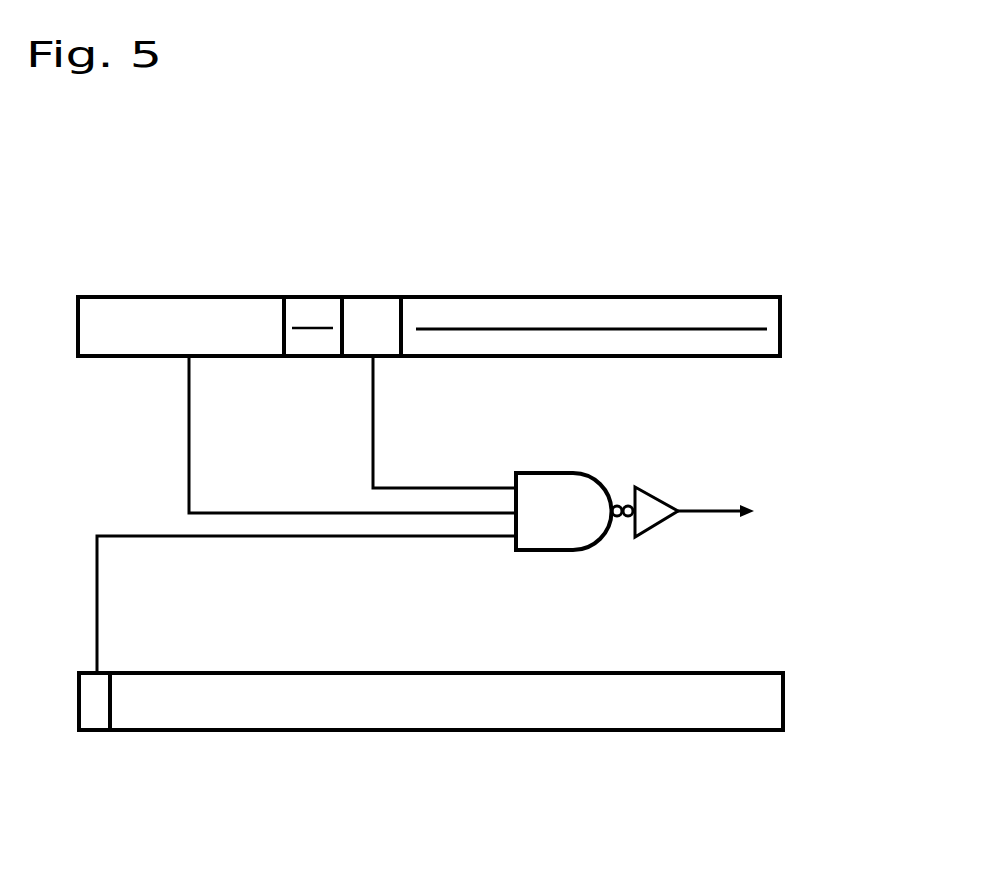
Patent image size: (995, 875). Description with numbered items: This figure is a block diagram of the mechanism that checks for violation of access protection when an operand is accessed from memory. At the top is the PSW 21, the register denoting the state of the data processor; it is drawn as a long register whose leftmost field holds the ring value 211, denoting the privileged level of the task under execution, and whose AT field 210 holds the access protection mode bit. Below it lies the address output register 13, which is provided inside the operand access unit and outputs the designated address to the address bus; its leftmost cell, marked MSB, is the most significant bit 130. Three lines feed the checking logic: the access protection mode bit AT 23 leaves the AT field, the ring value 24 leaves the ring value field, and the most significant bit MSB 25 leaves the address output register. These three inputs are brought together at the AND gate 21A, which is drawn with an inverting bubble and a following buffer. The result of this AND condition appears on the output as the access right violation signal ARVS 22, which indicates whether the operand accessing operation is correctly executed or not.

The PSW 21 is at (675, 297).
The ring value field 211 is at (197, 297).
The AT (address test) bit field 210 is at (372, 297).
The AND gate 21A is at (562, 473).
The access right violation signal ARVS 22 is at (707, 511).
The access protection mode bit AT 23 is at (373, 420).
The ring value 24 is at (189, 432).
The most significant bit MSB 25 is at (97, 604).
The address output register 13 is at (745, 730).
The MSB bit of address output register 130 is at (120, 770).